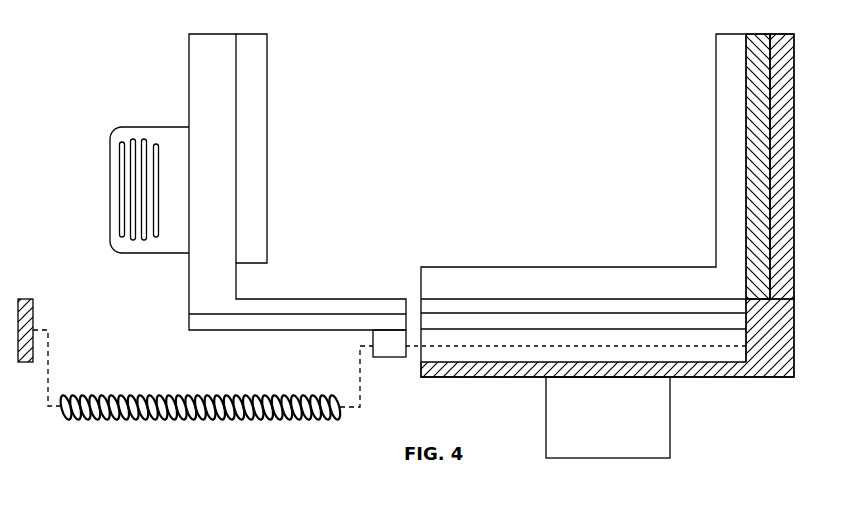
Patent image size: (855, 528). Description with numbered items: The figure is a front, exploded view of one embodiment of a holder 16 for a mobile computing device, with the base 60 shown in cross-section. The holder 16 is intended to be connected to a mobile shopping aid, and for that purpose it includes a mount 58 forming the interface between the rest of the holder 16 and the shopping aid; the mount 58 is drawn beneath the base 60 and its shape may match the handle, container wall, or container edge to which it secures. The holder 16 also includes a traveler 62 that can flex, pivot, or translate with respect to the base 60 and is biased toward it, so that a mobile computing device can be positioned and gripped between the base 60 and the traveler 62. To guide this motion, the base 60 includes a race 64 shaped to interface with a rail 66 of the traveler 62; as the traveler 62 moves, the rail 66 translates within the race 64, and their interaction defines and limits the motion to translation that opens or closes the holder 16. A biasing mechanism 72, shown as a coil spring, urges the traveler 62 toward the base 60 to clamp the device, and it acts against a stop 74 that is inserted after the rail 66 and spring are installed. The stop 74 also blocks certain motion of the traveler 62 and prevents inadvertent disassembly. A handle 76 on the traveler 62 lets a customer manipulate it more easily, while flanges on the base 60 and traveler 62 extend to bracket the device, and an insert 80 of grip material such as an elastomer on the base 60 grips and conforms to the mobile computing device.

The holder 16 is at (98, 40).
The mount 58 is at (596, 424).
The base 60 is at (576, 172).
The traveler 62 is at (291, 147).
The race 64 is at (612, 320).
The rail 66 is at (226, 322).
The biasing mechanism 72 is at (243, 389).
The stop 74 is at (30, 302).
The handle 76 is at (126, 136).
The insert 80 is at (762, 42).